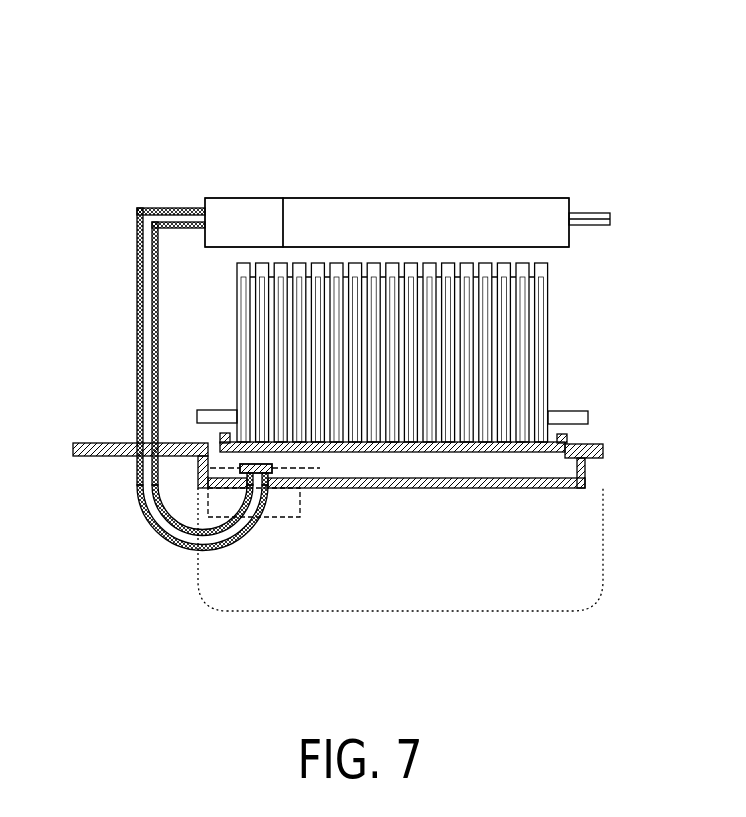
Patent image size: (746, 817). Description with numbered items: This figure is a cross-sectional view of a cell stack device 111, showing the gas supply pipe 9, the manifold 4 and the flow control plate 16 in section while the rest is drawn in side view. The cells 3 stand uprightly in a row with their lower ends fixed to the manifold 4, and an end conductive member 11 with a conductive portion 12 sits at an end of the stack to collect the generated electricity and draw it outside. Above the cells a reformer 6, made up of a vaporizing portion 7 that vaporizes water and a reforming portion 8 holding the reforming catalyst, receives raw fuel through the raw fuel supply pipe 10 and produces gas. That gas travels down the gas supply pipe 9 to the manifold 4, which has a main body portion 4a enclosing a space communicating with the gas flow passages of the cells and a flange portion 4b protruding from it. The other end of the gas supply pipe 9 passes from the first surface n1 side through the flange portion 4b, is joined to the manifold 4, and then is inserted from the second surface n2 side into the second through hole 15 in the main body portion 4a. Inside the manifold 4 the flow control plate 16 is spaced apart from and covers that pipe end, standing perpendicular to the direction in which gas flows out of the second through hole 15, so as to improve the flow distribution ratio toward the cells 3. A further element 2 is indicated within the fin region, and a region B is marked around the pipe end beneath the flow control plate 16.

The cell stack device 111 is at (173, 122).
The reformer 6 is at (370, 88).
The vaporizing portion 7 is at (260, 220).
The reforming portion 8 is at (320, 220).
The heat pipe 2 is at (338, 290).
The cell 3 is at (453, 285).
The raw fuel supply pipe 10 is at (596, 222).
The gas supply pipe 9 is at (150, 242).
The second through hole 15 is at (262, 505).
The end conductive member 11 is at (442, 286).
The conductive portion 12 is at (585, 410).
The manifold 4 is at (355, 524).
The main body portion 4a is at (362, 611).
The flange portion 4b is at (125, 442).
The first surface n1 is at (92, 443).
The second surface n2 is at (577, 488).
The flow control plate 16 is at (320, 468).
The region B is at (265, 511).